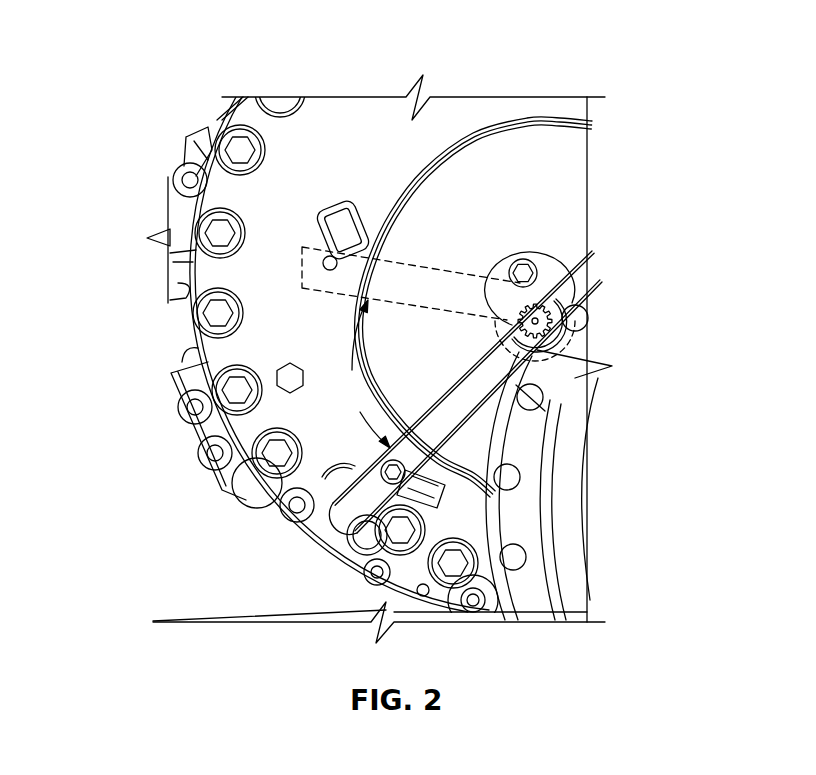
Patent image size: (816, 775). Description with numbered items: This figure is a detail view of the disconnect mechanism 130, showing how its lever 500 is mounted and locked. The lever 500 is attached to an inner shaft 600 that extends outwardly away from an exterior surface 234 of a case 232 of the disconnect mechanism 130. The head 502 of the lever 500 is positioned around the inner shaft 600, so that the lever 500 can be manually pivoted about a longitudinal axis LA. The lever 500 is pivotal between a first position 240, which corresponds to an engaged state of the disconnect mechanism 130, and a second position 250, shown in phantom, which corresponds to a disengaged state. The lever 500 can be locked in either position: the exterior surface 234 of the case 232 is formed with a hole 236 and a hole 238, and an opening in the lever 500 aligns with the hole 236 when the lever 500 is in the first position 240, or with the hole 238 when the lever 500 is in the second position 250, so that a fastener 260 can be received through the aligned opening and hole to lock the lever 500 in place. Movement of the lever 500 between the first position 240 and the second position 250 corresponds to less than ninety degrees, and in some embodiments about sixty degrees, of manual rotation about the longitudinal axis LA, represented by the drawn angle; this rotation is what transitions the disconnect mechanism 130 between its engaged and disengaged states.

The disconnect mechanism 130 is at (548, 157).
The case 232 is at (560, 190).
The exterior surface 234 is at (476, 308).
The hole 236 is at (400, 452).
The hole 238 is at (338, 205).
The first position 240 is at (445, 455).
The second position 250 is at (320, 298).
The fastener 260 is at (332, 518).
The lever 500 is at (418, 430).
The head 502 is at (552, 292).
The inner shaft 600 is at (555, 293).
The longitudinal axis LA is at (546, 326).